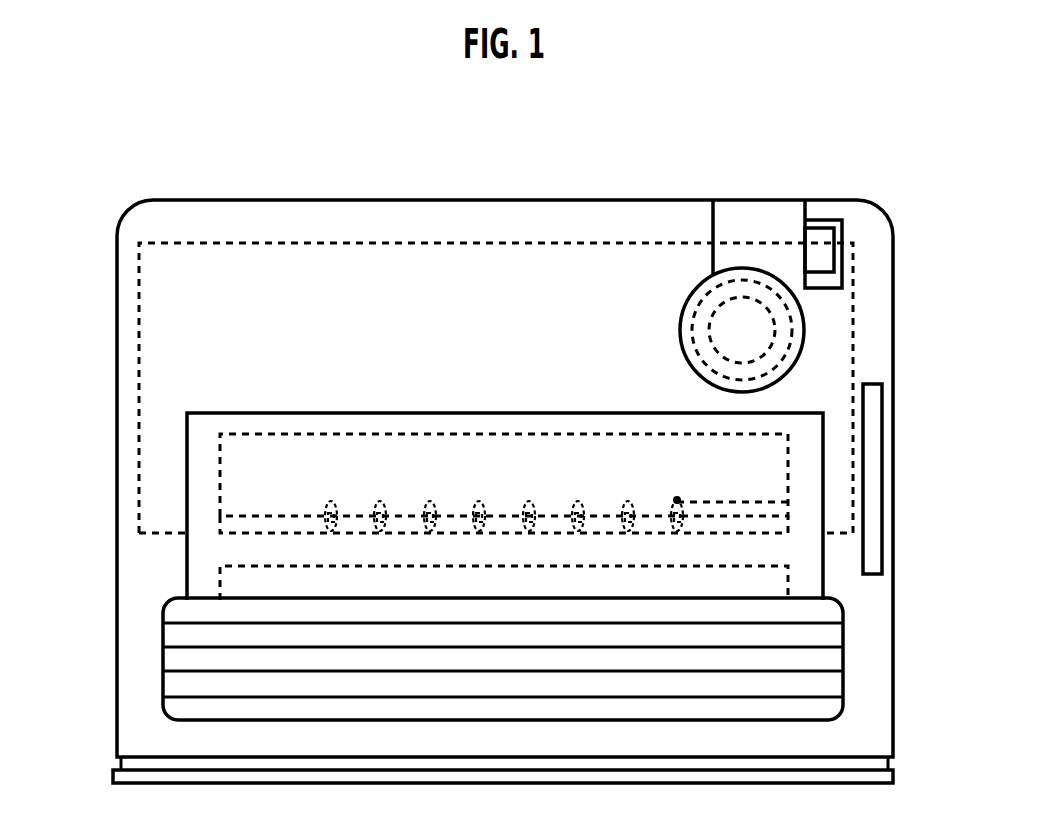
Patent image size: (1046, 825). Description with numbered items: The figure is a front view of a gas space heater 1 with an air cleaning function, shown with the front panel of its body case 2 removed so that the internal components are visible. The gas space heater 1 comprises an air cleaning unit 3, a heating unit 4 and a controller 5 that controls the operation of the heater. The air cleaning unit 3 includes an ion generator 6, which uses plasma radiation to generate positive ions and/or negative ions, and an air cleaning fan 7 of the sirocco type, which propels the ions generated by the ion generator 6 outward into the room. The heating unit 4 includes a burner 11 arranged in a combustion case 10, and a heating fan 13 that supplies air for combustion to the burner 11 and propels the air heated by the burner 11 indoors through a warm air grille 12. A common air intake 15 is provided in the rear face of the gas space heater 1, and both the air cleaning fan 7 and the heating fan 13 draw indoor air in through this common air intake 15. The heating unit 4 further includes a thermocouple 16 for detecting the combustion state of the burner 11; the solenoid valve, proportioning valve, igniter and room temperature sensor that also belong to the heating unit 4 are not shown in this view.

The gas space heater 1 is at (195, 123).
The body case 2 is at (128, 209).
The air cleaning unit 3 is at (848, 232).
The heating unit 4 is at (499, 640).
The controller 5 is at (883, 426).
The ion generator 6 is at (821, 232).
The air cleaning fan 7 is at (805, 327).
The combustion case 10 is at (220, 468).
The burner 11 is at (220, 525).
The warm air grille 12 is at (185, 657).
The heating fan 13 is at (232, 582).
The common air intake 15 is at (139, 363).
The thermocouple 16 is at (738, 500).